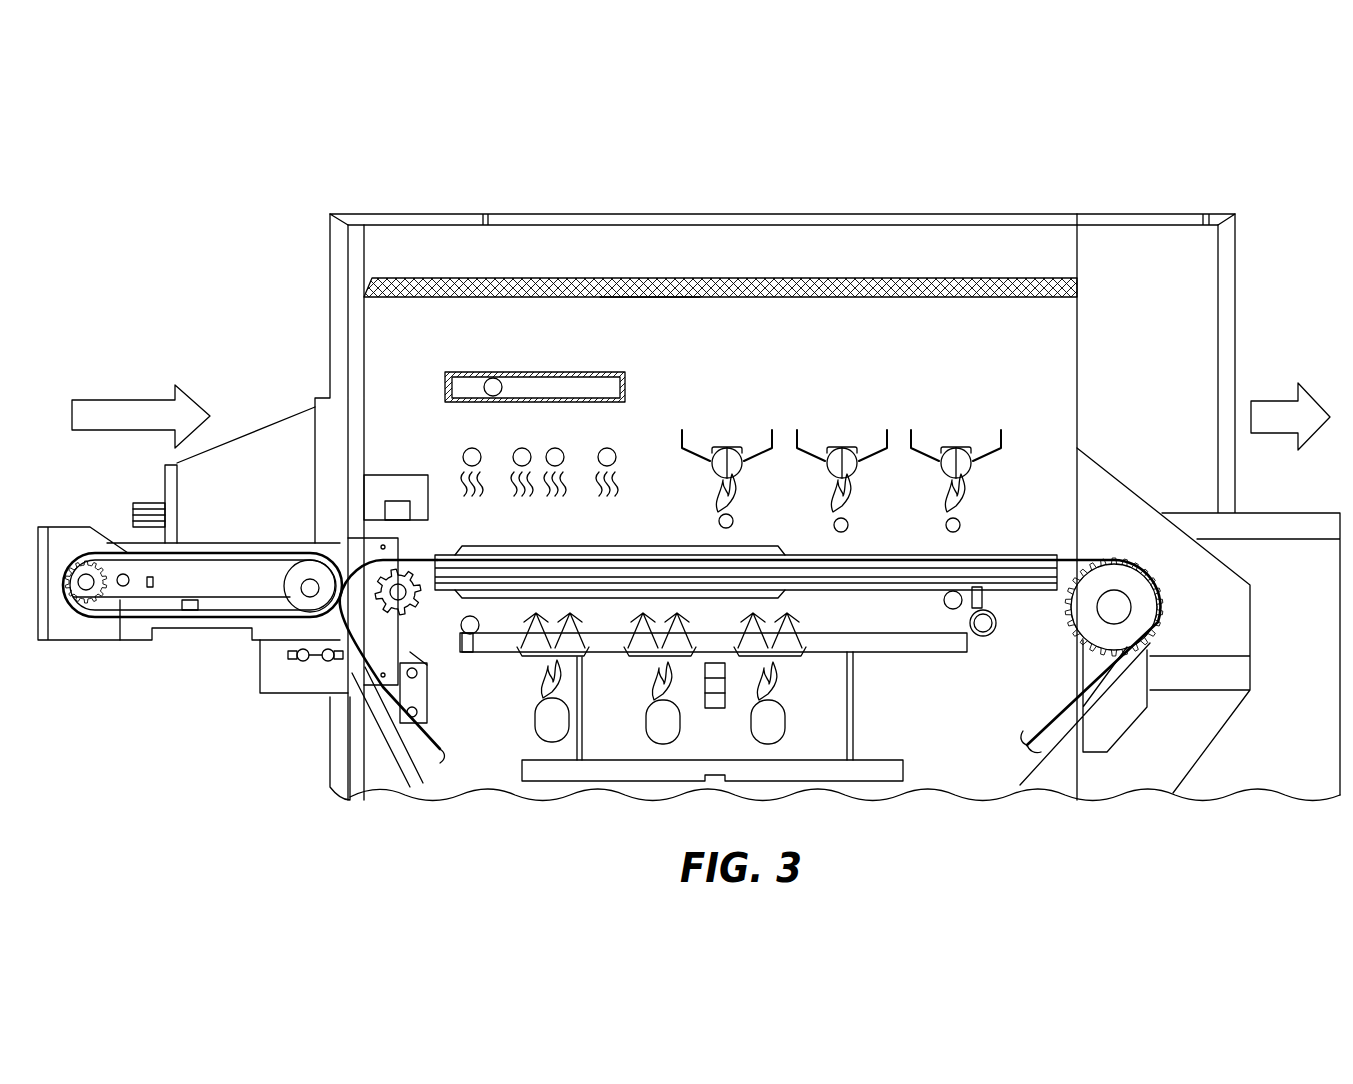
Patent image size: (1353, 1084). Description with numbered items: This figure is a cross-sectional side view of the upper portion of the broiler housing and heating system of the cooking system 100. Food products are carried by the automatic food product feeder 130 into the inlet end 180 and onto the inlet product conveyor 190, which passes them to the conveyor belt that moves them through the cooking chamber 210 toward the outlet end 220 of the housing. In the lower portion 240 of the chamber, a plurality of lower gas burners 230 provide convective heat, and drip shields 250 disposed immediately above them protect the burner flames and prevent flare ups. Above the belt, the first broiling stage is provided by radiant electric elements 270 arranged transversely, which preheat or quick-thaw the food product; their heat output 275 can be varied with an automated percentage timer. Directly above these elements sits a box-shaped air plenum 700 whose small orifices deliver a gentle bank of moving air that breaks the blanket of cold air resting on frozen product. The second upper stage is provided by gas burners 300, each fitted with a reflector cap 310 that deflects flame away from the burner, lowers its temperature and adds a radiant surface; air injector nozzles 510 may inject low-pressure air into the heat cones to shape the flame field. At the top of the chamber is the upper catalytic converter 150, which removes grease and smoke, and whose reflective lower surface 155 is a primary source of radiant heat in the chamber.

The cooking system 100 is at (204, 166).
The automatic food product feeder 130 is at (238, 583).
The upper catalytic converter 150 is at (644, 277).
The reflective lower surface 155 is at (618, 303).
The inlet end 180 is at (229, 371).
The inlet product conveyor 190 is at (113, 560).
The cooking chamber 210 is at (788, 326).
The outlet end 220 is at (1263, 293).
The lower gas burners 230 is at (768, 722).
The lower portion 240 is at (961, 778).
The drip shields 250 is at (517, 650).
The radiant electric elements 270 is at (537, 468).
The heat output 275 is at (519, 504).
The gas burners 300 is at (742, 470).
The reflector cap 310 is at (686, 436).
The air injector nozzles 510 is at (734, 521).
The air plenum 700 is at (464, 372).